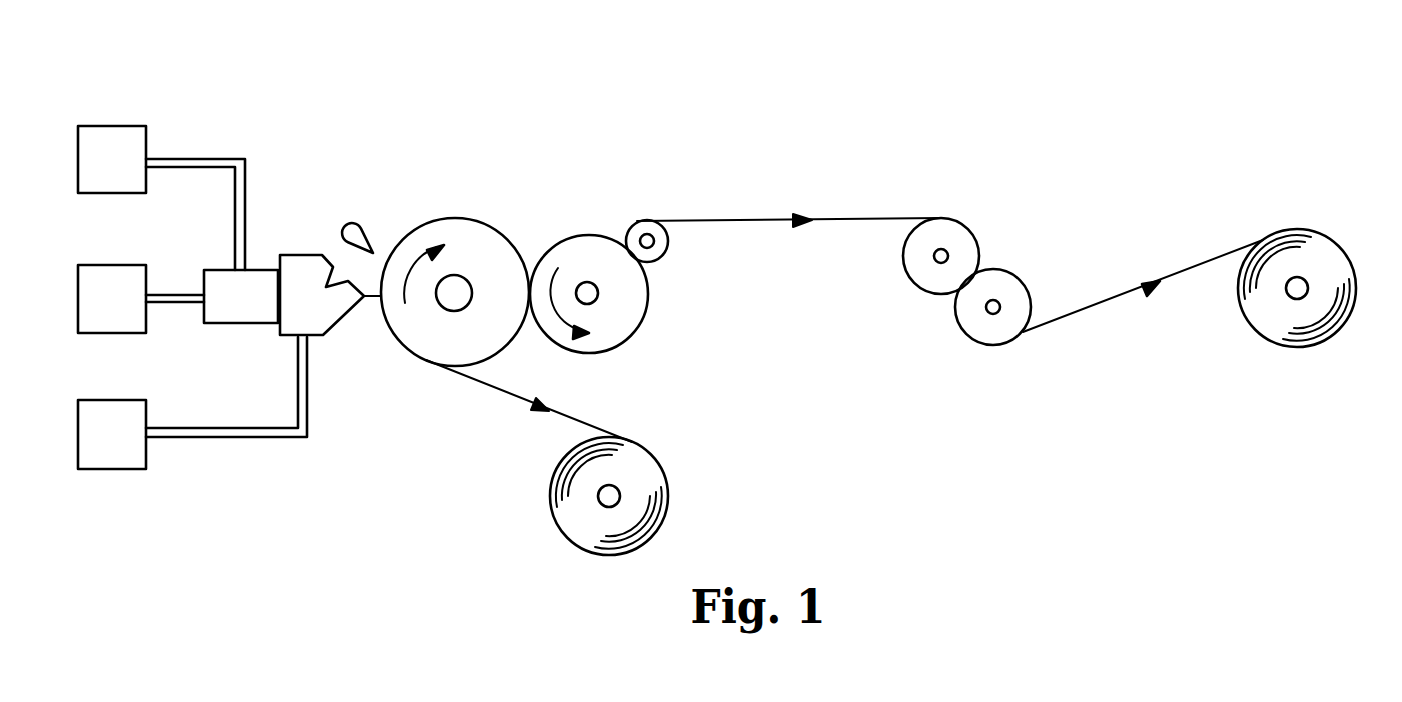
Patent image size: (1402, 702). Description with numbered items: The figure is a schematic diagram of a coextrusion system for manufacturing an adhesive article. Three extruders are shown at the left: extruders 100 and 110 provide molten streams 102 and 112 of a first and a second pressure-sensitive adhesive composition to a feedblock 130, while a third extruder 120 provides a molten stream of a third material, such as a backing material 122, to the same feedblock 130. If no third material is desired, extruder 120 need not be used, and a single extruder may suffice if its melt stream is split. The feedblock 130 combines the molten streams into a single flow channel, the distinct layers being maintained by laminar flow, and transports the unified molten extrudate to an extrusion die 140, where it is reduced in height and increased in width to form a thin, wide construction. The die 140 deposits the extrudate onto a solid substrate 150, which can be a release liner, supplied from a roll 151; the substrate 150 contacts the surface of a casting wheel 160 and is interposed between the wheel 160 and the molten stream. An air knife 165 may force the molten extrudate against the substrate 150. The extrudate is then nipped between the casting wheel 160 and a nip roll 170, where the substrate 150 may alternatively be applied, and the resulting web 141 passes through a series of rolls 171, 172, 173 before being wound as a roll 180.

The extruder 100 is at (105, 125).
The molten stream 102 is at (188, 158).
The extruder 110 is at (107, 399).
The molten stream 112 is at (192, 428).
The extruder 120 is at (110, 264).
The backing material 122 is at (178, 293).
The feedblock 130 is at (257, 280).
The extrusion die 140 is at (325, 305).
The coated web 141 is at (735, 215).
The solid substrate 150 is at (483, 385).
The roll 151 is at (582, 522).
The casting wheel 160 is at (468, 232).
The air knife 165 is at (358, 232).
The nip roll 170 is at (580, 248).
The roll 171 is at (657, 248).
The roll 172 is at (952, 232).
The roll 173 is at (1012, 287).
The roll 180 is at (1333, 255).